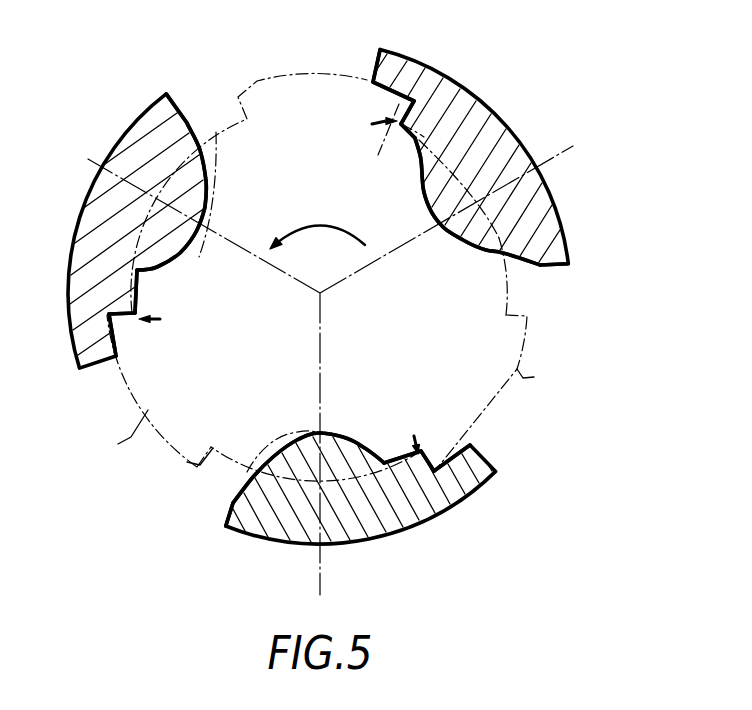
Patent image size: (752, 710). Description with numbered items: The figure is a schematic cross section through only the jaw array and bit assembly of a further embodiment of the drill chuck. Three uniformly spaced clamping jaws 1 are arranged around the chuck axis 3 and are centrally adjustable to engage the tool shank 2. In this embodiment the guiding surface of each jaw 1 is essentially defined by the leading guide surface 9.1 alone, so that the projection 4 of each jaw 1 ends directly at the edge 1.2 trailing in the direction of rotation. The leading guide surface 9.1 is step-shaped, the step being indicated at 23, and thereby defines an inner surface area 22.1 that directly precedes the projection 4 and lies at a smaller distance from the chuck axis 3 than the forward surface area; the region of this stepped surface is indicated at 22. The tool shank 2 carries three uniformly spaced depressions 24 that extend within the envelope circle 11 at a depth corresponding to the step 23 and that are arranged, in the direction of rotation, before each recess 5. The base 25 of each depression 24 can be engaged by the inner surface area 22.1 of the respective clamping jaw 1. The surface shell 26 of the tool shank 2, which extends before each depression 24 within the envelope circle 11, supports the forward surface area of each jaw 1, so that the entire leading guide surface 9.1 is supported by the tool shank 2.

The clamping jaw 1 is at (148, 133).
The edge 1.2 is at (172, 97).
The tool shank 2 is at (530, 338).
The chuck axis 3 is at (321, 294).
The projection 4 is at (447, 232).
The recess 5 is at (478, 272).
The leading guide surface 9.1 is at (374, 124).
The envelope circle 11 is at (258, 68).
The end face 22 is at (380, 93).
The inner surface area 22.1 is at (417, 150).
The step 23 is at (426, 135).
The depression 24 is at (397, 126).
The base 25 is at (432, 152).
The surface shell 26 is at (392, 93).